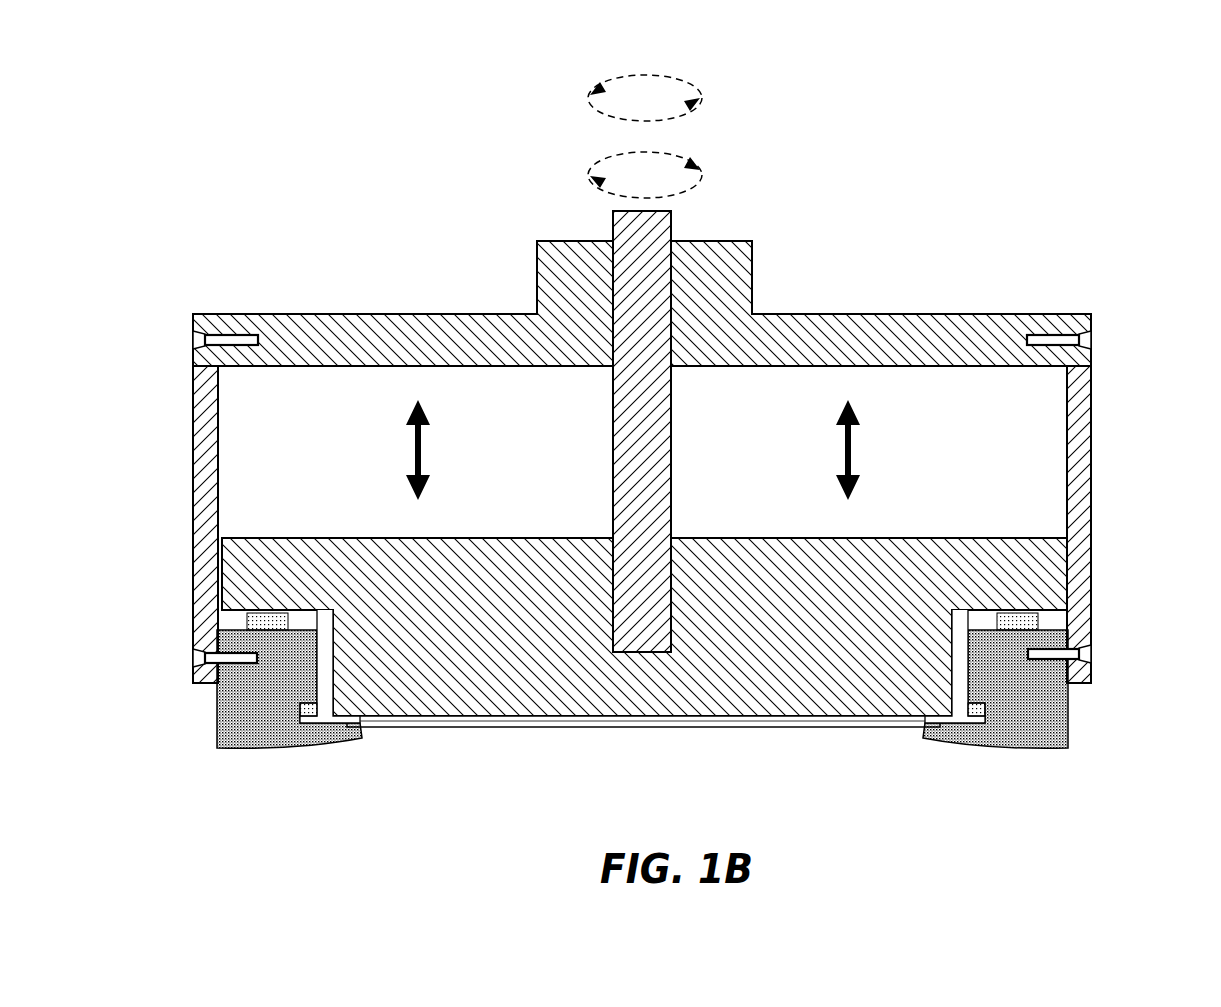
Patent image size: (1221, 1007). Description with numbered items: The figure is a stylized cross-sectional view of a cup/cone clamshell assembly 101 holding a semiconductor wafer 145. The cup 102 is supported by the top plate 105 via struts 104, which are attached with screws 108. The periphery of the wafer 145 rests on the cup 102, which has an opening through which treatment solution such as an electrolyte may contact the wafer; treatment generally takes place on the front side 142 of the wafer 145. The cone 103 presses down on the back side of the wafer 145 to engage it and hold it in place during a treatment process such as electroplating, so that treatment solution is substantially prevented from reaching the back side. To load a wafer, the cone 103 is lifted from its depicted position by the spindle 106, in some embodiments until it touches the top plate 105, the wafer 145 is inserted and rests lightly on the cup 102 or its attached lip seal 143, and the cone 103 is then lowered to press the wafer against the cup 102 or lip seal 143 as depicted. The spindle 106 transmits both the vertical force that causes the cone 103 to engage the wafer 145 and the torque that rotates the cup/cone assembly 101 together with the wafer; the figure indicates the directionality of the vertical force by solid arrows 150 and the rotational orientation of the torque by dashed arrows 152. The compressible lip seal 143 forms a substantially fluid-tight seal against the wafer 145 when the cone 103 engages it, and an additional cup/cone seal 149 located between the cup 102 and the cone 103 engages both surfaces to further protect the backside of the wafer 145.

The cup/cone assembly 101 is at (232, 138).
The cup 102 is at (232, 728).
The cone 103 is at (862, 537).
The struts 104 is at (193, 475).
The top plate 105 is at (452, 327).
The spindle 106 is at (613, 425).
The screws 108 is at (193, 338).
The front side 142 is at (543, 727).
The lip seal 143 is at (367, 730).
The wafer 145 is at (678, 727).
The cup/cone seal 149 is at (245, 620).
The solid arrows 150 is at (872, 588).
The dashed arrows 152 is at (712, 145).